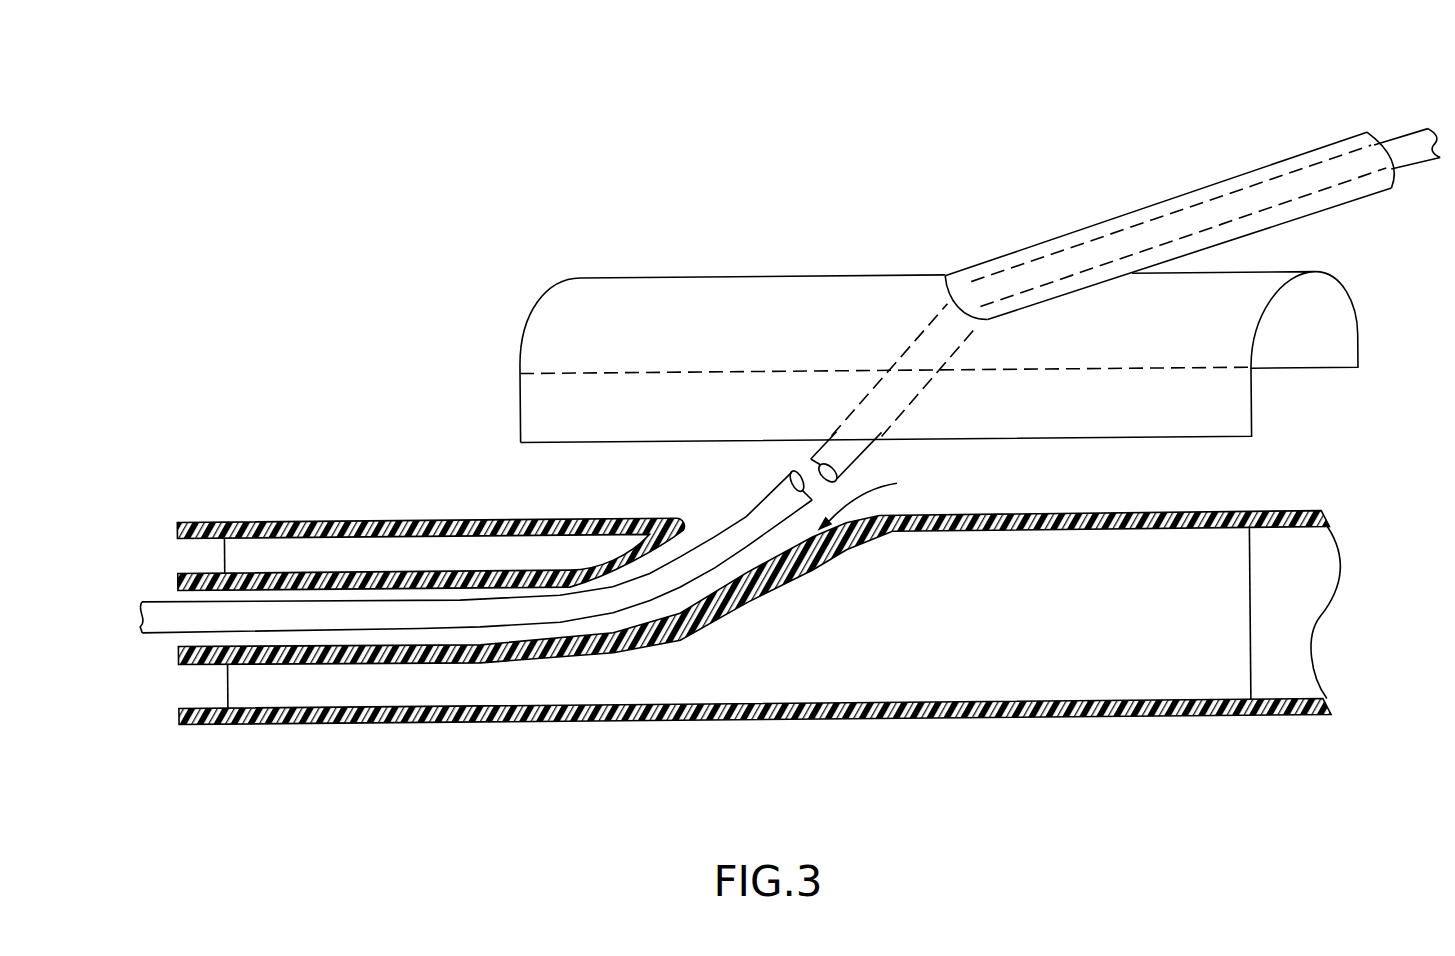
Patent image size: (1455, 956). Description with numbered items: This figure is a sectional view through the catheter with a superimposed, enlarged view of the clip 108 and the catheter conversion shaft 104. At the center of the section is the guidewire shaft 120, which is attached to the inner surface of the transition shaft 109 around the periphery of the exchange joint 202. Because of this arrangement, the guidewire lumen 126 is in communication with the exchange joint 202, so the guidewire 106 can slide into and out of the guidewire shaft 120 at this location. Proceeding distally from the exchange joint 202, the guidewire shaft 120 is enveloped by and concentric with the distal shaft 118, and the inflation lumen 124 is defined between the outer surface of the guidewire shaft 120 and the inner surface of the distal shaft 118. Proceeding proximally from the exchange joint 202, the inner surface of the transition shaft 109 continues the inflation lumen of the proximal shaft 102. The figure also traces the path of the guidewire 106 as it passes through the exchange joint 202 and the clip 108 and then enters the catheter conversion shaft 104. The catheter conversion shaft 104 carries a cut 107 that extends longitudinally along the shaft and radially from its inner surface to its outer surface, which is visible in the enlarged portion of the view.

The proximal shaft 102 is at (1290, 715).
The catheter conversion shaft 104 is at (1094, 149).
The guidewire 106 is at (255, 617).
The cut 107 is at (1268, 168).
The clip 108 is at (786, 312).
The transition shaft 109 is at (797, 727).
The distal shaft 118 is at (190, 518).
The guidewire shaft 120 is at (299, 569).
The inflation lumen 124 is at (182, 556).
The guidewire lumen 126 is at (427, 637).
The exchange joint 202 is at (707, 517).